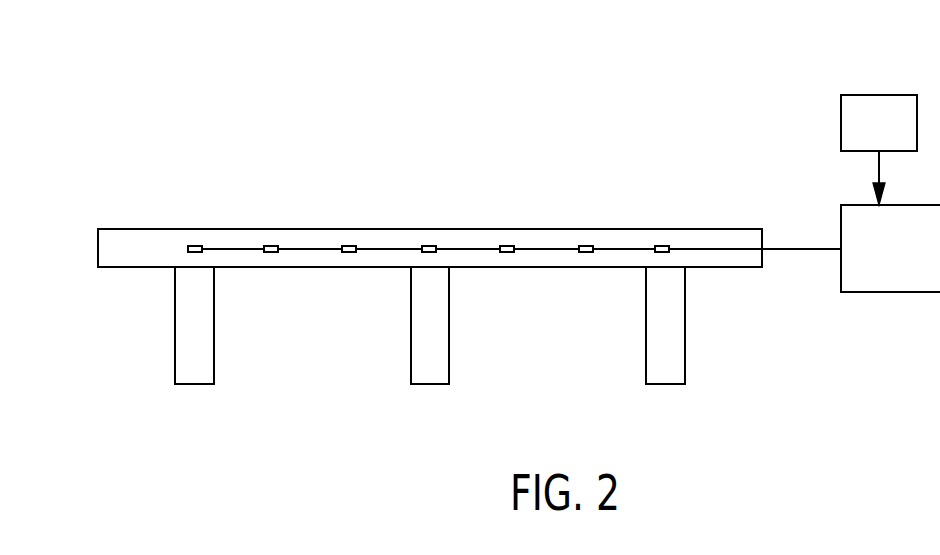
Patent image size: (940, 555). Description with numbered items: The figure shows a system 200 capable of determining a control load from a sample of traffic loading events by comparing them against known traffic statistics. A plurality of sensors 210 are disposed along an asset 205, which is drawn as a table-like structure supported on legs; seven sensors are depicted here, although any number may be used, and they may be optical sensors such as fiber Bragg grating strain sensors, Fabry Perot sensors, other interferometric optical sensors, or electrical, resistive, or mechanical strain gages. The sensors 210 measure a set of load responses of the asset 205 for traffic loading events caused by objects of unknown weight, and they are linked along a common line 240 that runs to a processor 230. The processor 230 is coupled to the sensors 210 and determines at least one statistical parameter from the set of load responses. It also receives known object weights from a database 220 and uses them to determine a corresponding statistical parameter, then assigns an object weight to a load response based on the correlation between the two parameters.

The sensing system 200 is at (486, 100).
The asset 205 is at (131, 229).
The sensors 210 is at (194, 246).
The database 220 is at (866, 137).
The processor 230 is at (893, 263).
The wire 240 is at (323, 247).